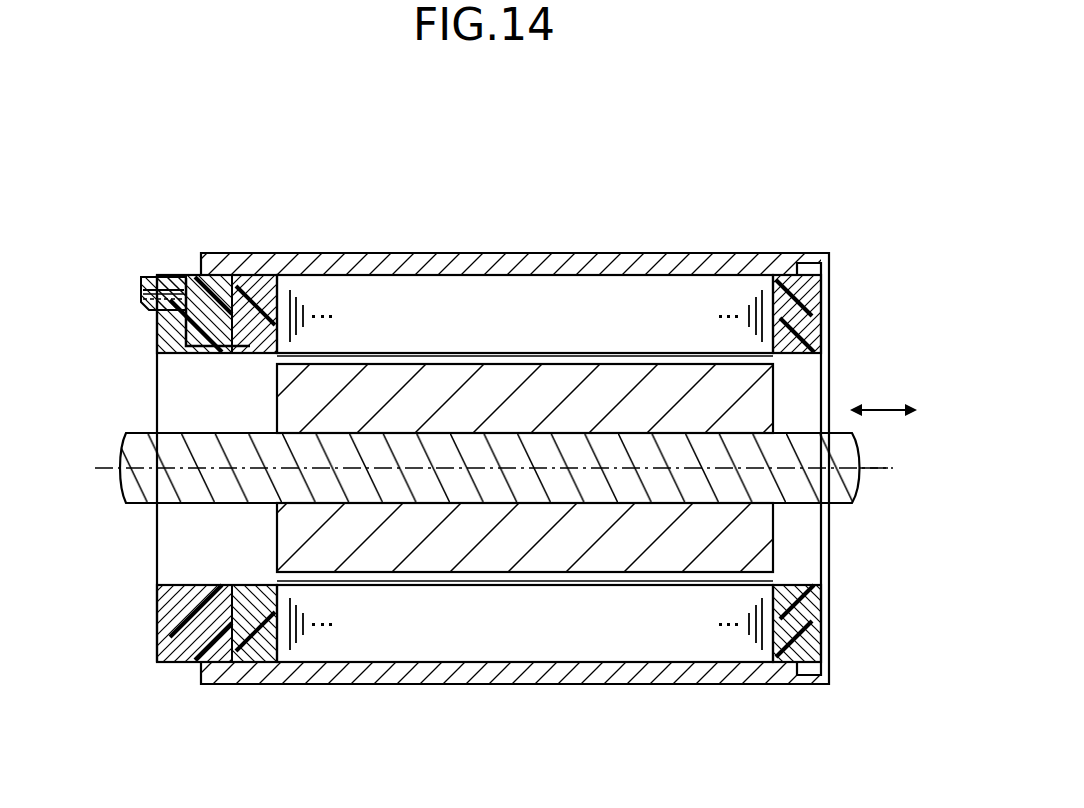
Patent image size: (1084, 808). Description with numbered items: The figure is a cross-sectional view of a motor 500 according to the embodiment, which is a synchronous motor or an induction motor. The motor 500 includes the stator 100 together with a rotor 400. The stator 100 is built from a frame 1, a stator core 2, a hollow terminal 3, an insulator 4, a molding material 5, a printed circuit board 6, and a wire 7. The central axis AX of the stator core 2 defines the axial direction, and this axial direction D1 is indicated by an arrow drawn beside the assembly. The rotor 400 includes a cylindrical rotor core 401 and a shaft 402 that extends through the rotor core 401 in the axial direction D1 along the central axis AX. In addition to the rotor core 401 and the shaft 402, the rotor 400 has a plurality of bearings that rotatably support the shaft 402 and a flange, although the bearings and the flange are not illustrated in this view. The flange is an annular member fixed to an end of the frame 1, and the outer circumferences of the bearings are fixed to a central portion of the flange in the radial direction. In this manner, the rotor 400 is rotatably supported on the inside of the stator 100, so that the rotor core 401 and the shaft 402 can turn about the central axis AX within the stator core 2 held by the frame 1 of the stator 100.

The motor 500 is at (407, 131).
The stator 100 is at (824, 193).
The frame 1 is at (675, 253).
The stator core 2 is at (548, 300).
The hollow terminal 3 is at (148, 277).
The insulator 4 is at (252, 277).
The molding material 5 is at (157, 617).
The printed circuit board 6 is at (157, 318).
The wire 7 is at (217, 353).
The rotor 400 is at (792, 382).
The rotor core 401 is at (658, 558).
The shaft 402 is at (563, 490).
The axial direction D1 is at (883, 398).
The central axis AX is at (880, 468).